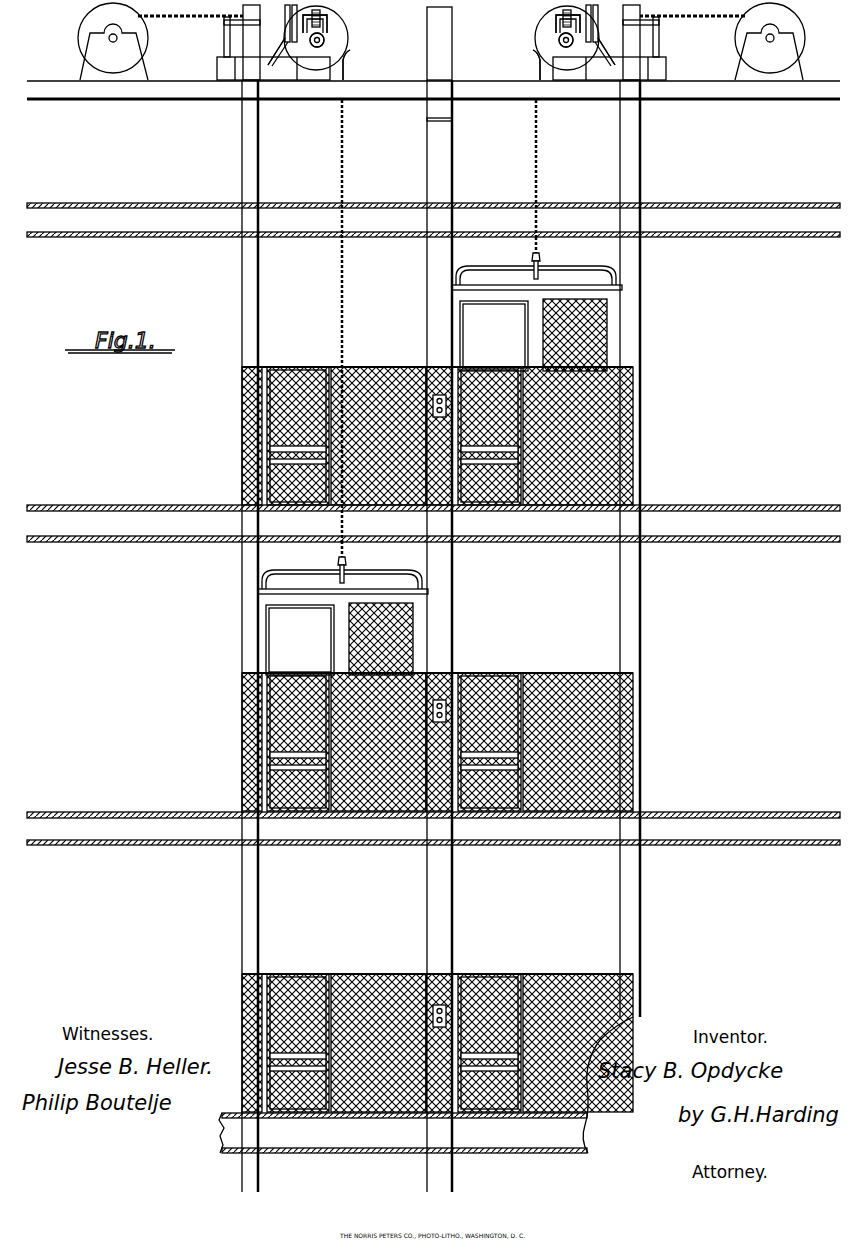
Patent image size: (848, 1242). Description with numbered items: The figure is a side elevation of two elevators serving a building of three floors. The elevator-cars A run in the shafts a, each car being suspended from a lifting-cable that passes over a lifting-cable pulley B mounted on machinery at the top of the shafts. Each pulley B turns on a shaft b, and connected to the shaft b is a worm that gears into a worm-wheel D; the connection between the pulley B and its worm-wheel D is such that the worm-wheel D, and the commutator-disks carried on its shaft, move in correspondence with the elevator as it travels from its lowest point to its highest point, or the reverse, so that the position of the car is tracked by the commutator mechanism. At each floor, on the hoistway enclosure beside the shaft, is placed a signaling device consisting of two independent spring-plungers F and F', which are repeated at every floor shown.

The shafts a is at (441, 636).
The elevator-cars A is at (440, 456).
The spring-plunger F is at (437, 730).
The spring-plunger F' is at (457, 684).
The lifting-cable pulleys B is at (346, 40).
The worm-wheels D is at (326, 13).
The shafts of the pulleys b is at (346, 62).